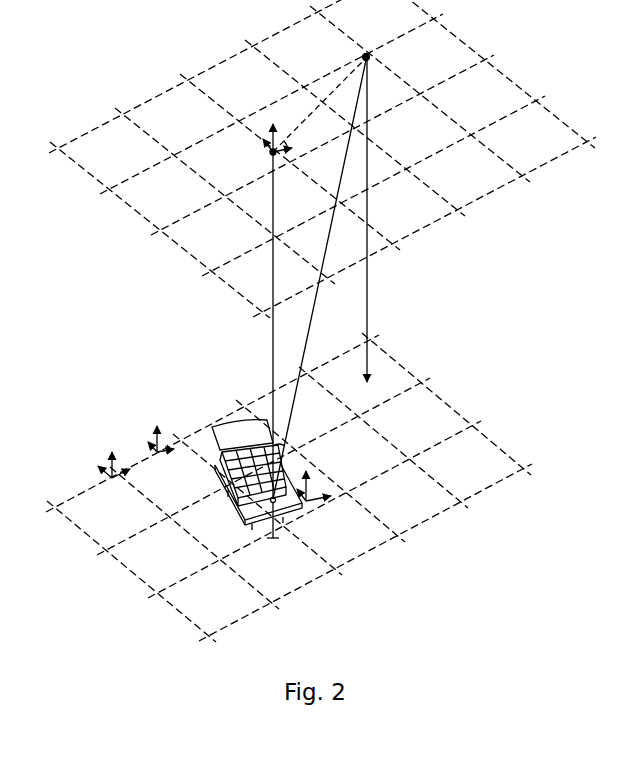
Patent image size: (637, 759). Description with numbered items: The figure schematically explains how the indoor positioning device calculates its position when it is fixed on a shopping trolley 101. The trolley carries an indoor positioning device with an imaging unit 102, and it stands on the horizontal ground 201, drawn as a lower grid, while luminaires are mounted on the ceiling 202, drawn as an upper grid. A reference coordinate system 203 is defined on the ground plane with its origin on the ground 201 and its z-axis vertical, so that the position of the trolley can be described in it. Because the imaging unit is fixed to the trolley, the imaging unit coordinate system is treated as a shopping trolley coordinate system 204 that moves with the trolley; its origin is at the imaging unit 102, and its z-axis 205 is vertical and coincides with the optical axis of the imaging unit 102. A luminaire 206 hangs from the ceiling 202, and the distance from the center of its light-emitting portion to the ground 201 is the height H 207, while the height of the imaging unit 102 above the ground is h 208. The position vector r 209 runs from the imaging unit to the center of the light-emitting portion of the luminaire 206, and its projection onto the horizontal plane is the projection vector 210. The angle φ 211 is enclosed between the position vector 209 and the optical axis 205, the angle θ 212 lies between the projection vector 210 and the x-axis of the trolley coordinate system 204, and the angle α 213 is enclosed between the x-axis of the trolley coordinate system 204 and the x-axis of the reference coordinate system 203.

The object / vehicle body 101 is at (233, 500).
The imaging unit 102 is at (287, 506).
The horizontal ground 201 is at (289, 487).
The ceiling 202 is at (322, 159).
The reference coordinate system 203 is at (110, 465).
The shopping trolley coordinate system 204 is at (270, 151).
The z-axis 205 is at (272, 373).
The luminaire 206 is at (371, 55).
The distance H 207 is at (375, 229).
The height h 208 is at (258, 533).
The position vector r 209 is at (312, 319).
The projection vector r_H 210 is at (311, 112).
The angle φ 211 is at (283, 440).
The angle θ 212 is at (292, 143).
The angle α 213 is at (169, 446).